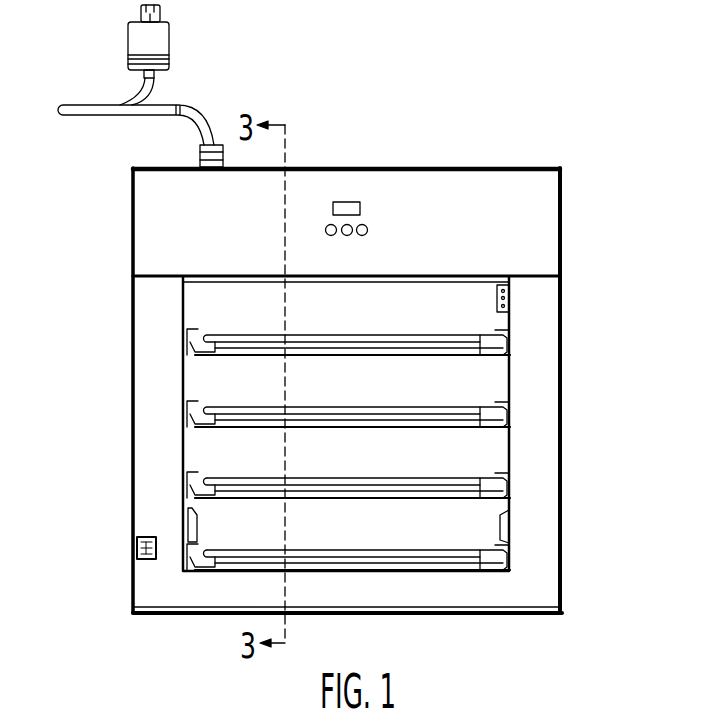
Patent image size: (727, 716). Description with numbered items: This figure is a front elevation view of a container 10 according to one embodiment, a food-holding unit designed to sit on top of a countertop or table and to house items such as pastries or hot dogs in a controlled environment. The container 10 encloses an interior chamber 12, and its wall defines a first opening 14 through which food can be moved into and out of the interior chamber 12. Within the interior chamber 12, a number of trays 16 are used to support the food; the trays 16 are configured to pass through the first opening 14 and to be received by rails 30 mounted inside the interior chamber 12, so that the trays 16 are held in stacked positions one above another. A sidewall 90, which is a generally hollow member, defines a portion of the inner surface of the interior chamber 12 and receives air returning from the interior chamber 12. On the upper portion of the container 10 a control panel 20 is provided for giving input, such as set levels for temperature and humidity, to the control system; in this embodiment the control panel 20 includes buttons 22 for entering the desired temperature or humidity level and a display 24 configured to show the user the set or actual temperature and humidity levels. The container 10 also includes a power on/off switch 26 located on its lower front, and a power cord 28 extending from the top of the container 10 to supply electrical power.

The container 10 is at (517, 130).
The interior chamber 12 is at (397, 523).
The first opening 14 is at (478, 382).
The trays 16 is at (300, 336).
The control panel 20 is at (317, 210).
The buttons 22 is at (366, 233).
The display 24 is at (360, 206).
The power on/off switch 26 is at (137, 545).
The power cord 28 is at (85, 118).
The rails 30 is at (192, 400).
The sidewalls 90 is at (132, 442).